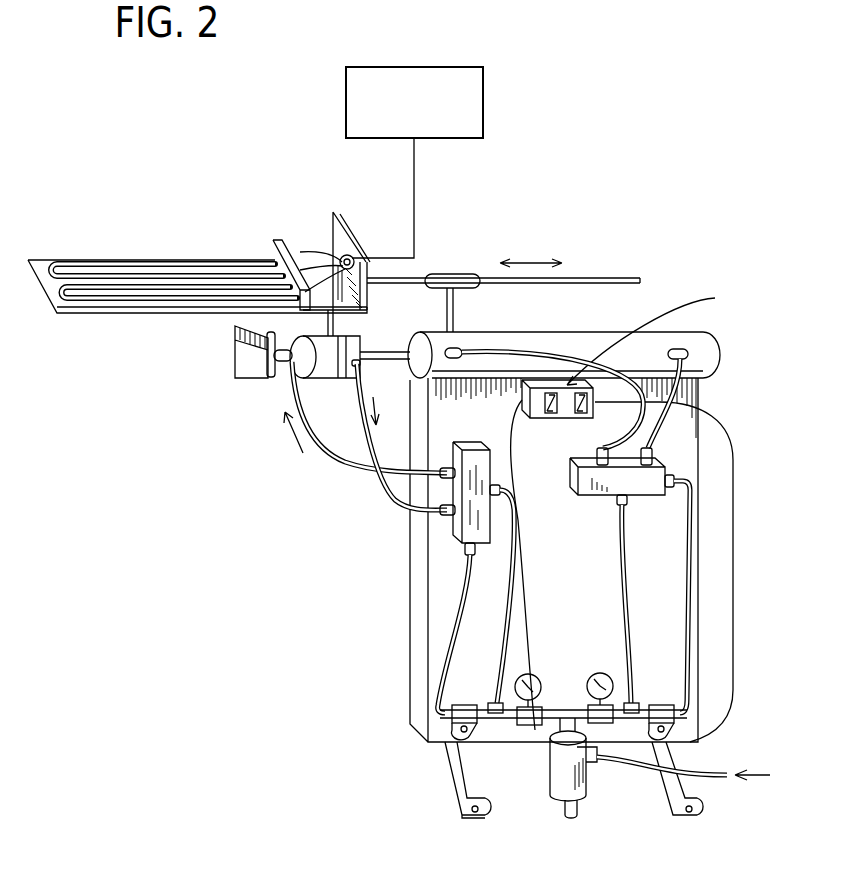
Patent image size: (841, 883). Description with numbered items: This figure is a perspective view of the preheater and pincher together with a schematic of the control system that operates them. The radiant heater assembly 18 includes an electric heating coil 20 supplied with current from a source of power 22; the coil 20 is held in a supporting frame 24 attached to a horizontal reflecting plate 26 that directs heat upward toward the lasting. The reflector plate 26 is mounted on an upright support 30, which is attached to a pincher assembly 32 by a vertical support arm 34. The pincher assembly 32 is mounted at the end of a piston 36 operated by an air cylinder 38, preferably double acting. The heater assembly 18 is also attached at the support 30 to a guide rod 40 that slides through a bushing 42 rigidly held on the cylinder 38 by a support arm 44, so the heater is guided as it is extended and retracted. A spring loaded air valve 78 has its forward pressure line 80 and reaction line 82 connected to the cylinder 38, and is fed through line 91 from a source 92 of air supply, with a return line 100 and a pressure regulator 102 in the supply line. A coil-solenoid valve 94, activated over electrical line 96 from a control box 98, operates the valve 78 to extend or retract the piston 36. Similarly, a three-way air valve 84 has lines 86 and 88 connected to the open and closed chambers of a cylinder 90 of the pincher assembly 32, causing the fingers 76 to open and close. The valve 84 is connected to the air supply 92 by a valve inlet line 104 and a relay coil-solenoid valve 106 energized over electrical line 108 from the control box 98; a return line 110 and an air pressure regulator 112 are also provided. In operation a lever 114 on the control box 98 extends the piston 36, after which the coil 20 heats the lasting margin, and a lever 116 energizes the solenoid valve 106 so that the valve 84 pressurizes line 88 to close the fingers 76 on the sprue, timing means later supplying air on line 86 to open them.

The radiant heater assembly 18 is at (202, 236).
The electric heating coil 20 is at (118, 259).
The source of power 22 is at (437, 67).
The supporting frame 24 is at (286, 240).
The reflecting plate 26 is at (88, 318).
The upright support 30 is at (350, 230).
The pincher assembly 32 is at (216, 395).
The vertical support arm 34 is at (328, 323).
The piston 36 is at (386, 362).
The air cylinder 38 is at (535, 333).
The guide rod 40 is at (595, 277).
The bushing 42 is at (451, 274).
The support arm 44 is at (456, 310).
The fingers 76 is at (256, 379).
The spring loaded air valve 78 is at (605, 493).
The forward pressure line 80 is at (660, 427).
The reaction line 82 is at (600, 449).
The three-way air valve 84 is at (470, 527).
The line 86 is at (327, 457).
The line 88 is at (390, 503).
The cylinder 90 is at (358, 339).
The line 91 is at (687, 562).
The source of air supply 92 is at (720, 783).
The coil-solenoid valve 94 is at (662, 705).
The electrical line 96 is at (735, 663).
The control box 98 is at (654, 335).
The return line 100 is at (625, 580).
The pressure regulator 102 is at (600, 725).
The valve inlet line 104 is at (455, 603).
The relay coil-solenoid valve 106 is at (466, 706).
The electrical line 108 is at (527, 617).
The return line 110 is at (492, 638).
The air pressure regulator 112 is at (530, 725).
The lever 114 is at (568, 420).
The lever 116 is at (550, 413).